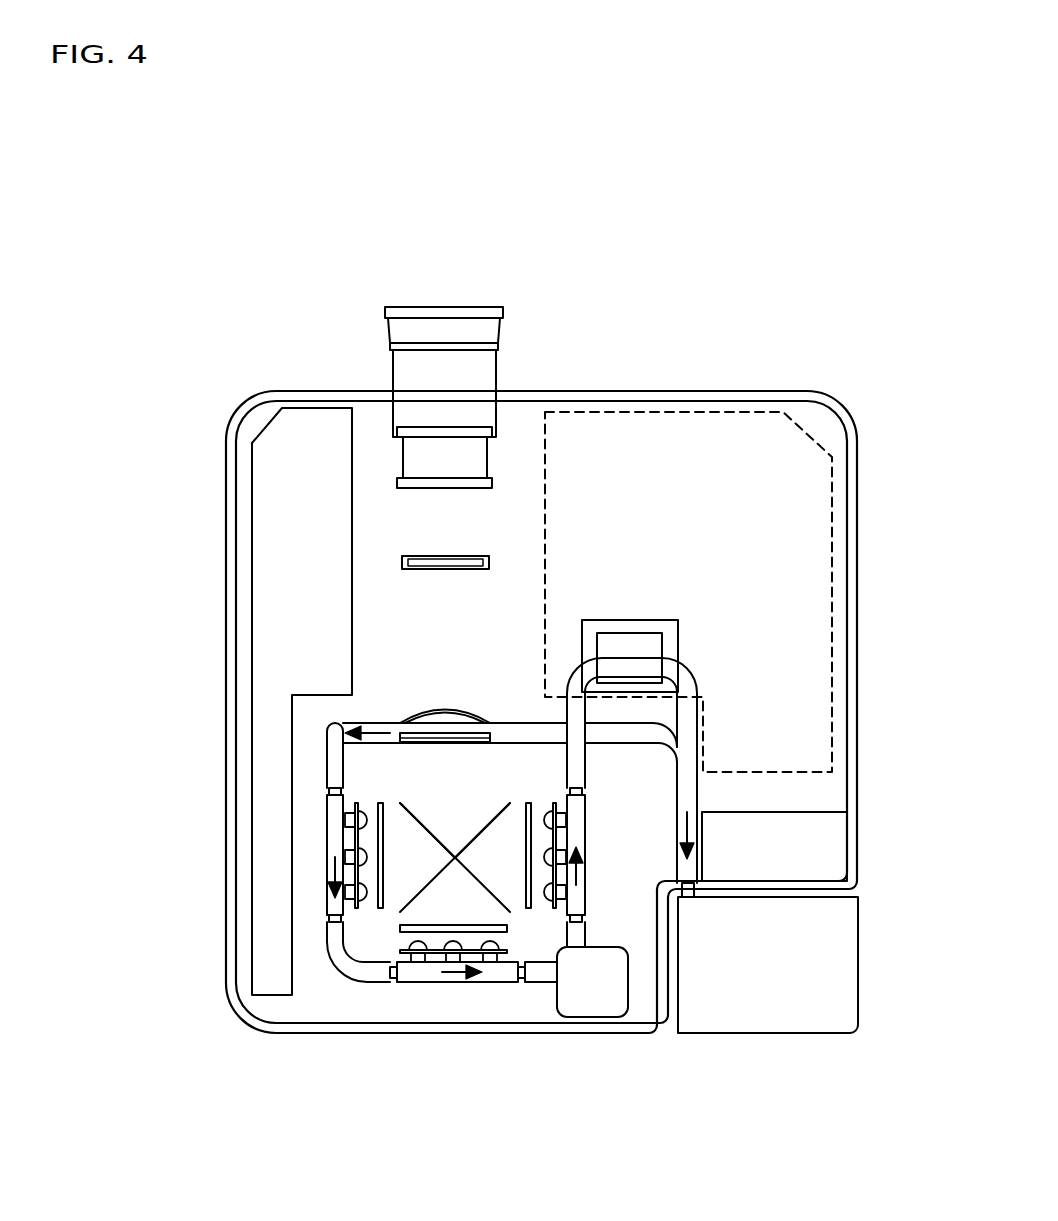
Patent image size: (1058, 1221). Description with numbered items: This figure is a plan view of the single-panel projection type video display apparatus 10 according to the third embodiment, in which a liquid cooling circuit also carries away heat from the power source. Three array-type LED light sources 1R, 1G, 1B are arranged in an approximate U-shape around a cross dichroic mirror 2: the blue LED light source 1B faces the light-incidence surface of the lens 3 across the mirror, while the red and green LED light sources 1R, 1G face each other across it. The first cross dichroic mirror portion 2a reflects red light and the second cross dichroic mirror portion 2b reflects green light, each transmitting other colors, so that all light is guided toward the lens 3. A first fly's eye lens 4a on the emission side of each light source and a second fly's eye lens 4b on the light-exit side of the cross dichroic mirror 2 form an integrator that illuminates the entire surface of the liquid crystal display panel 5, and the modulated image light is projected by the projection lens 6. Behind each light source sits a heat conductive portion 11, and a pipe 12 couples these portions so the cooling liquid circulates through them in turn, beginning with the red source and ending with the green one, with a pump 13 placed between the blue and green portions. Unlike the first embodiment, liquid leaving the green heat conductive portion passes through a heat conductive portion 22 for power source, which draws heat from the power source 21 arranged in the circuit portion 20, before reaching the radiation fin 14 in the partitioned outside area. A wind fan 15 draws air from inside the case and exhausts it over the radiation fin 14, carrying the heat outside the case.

The projection type video display apparatus 10 is at (877, 633).
The circuit portion 20 is at (262, 467).
The projection lens 6 is at (490, 373).
The liquid crystal display panel 5 is at (402, 558).
The power source 21 is at (618, 628).
The heat conductive portion for power source 22 is at (650, 660).
The pipe 12 is at (332, 735).
The lens 3 is at (410, 706).
The second fly's eye lens 4b is at (490, 735).
The cross dichroic mirror 2 is at (170, 745).
The first cross dichroic mirror portion 2a is at (510, 802).
The second cross dichroic mirror portion 2b is at (400, 803).
The first fly's eye lens 4a is at (378, 905).
The heat conductive portion 11 is at (332, 833).
The LED light source 1R is at (360, 900).
The LED light source 1G is at (554, 912).
The LED light source 1B is at (408, 948).
The pump 13 is at (583, 1008).
The wind fan 15 is at (835, 847).
The radiation fin 14 is at (775, 1027).